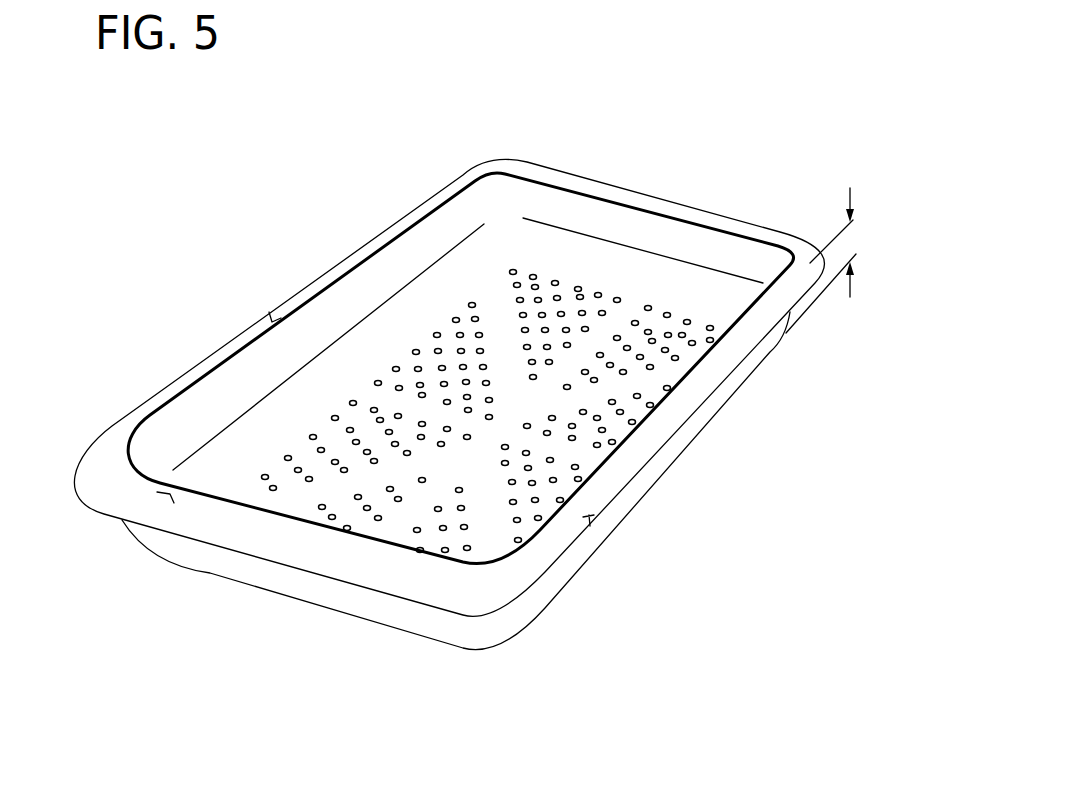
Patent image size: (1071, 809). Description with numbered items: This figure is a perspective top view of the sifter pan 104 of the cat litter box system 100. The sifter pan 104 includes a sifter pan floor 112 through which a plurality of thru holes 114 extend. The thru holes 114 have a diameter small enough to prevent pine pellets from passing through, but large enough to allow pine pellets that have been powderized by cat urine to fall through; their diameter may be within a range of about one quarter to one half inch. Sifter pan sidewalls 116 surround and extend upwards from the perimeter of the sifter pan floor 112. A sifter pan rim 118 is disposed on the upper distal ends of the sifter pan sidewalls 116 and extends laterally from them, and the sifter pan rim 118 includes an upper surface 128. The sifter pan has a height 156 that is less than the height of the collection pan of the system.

The cat litter box system 100 is at (745, 110).
The sifter pan 104 is at (697, 200).
The sifter pan floor 112 is at (271, 499).
The thru holes 114 is at (377, 381).
The sifter pan sidewalls 116 is at (576, 216).
The sifter pan rim 118 is at (620, 187).
The upper surface 128 is at (767, 235).
The height 156 is at (853, 242).